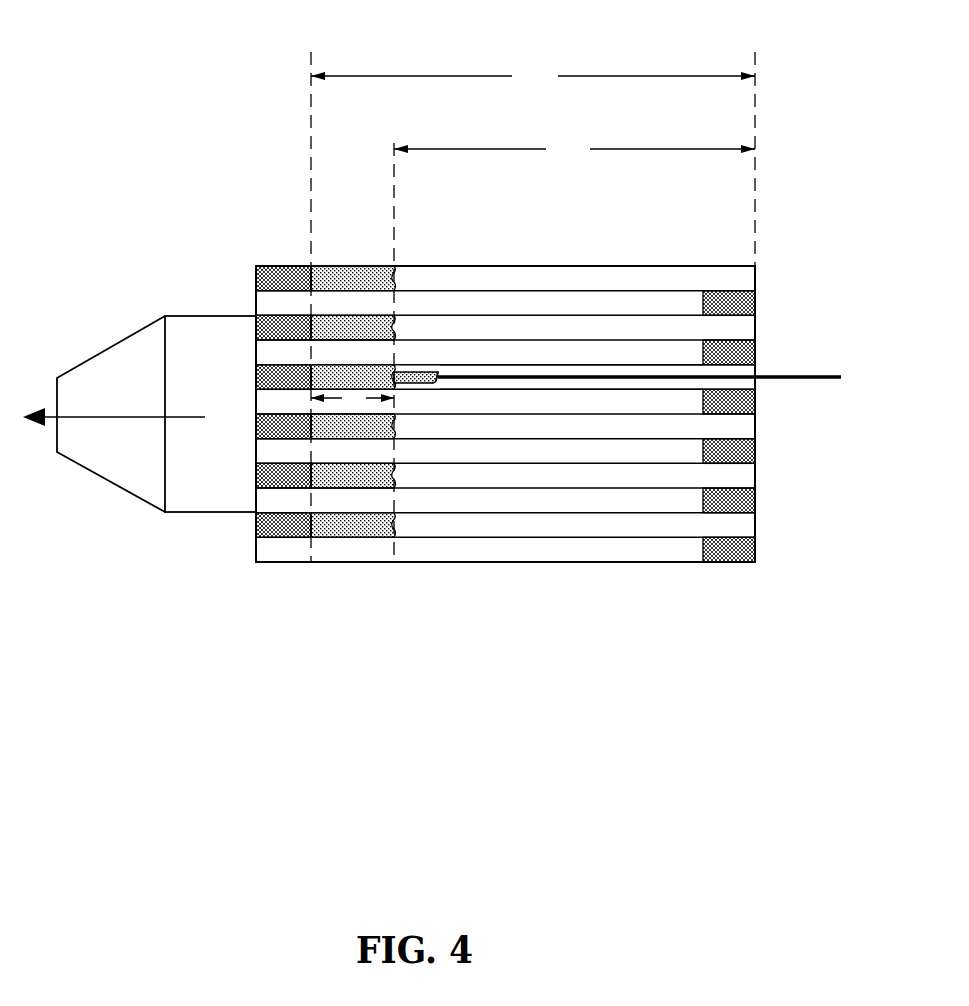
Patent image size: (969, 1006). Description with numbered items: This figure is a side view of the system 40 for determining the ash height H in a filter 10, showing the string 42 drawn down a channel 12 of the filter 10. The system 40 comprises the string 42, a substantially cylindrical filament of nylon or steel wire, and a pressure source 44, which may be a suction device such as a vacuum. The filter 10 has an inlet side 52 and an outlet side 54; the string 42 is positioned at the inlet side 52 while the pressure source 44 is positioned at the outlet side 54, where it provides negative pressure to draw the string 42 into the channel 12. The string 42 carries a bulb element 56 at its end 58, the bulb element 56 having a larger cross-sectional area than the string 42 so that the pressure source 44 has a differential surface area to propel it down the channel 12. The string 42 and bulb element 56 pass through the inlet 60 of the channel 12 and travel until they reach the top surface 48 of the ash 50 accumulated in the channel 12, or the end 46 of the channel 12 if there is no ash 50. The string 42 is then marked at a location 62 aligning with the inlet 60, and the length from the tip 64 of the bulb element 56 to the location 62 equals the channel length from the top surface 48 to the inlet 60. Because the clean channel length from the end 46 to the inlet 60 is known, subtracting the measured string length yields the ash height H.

The system 40 is at (245, 127).
The filter 10 is at (512, 266).
The channel 12 is at (577, 372).
The string 42 is at (798, 376).
The pressure source 44 is at (95, 475).
The end 46 is at (310, 385).
The top surface 48 is at (395, 388).
The ash 50 is at (333, 378).
The inlet side 52 is at (757, 527).
The outlet side 54 is at (256, 543).
The bulb element 56 is at (417, 379).
The end 58 is at (439, 372).
The inlet 60 is at (757, 372).
The location 62 is at (757, 381).
The tip 64 is at (393, 385).